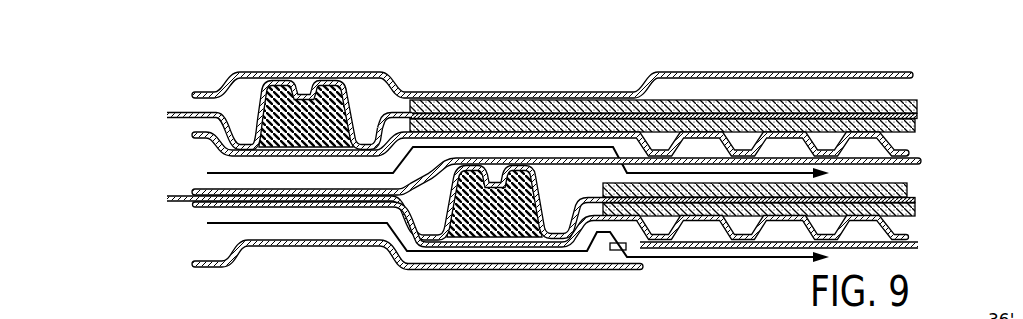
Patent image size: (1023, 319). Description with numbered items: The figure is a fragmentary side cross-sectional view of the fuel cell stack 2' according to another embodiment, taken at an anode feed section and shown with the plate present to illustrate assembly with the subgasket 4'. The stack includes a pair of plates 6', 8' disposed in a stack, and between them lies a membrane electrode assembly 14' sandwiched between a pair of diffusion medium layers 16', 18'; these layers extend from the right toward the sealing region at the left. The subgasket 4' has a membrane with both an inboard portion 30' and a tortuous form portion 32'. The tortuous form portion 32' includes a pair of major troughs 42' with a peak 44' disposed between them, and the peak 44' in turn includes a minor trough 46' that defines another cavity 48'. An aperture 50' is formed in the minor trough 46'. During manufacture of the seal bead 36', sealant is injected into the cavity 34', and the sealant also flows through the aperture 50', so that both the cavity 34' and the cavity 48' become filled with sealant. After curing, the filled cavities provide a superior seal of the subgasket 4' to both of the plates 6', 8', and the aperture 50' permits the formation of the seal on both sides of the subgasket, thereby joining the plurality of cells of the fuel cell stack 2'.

The fuel cell stack 2' is at (553, 139).
The subgasket 4' is at (173, 77).
The major troughs 42' is at (309, 91).
The seal bead 36' is at (283, 62).
The peak 44' is at (271, 91).
The cavity 48' is at (304, 66).
The aperture 50' is at (306, 79).
The minor trough 46' is at (352, 85).
The tortuous form portion 32' is at (378, 85).
The cavity 34' is at (539, 150).
The inboard portion 30' is at (693, 83).
The plate 6' is at (557, 58).
The diffusion medium layer 16' is at (693, 89).
The membrane electrode assembly 14' is at (693, 108).
The diffusion medium layer 18' is at (693, 131).
The plate 8' is at (580, 170).